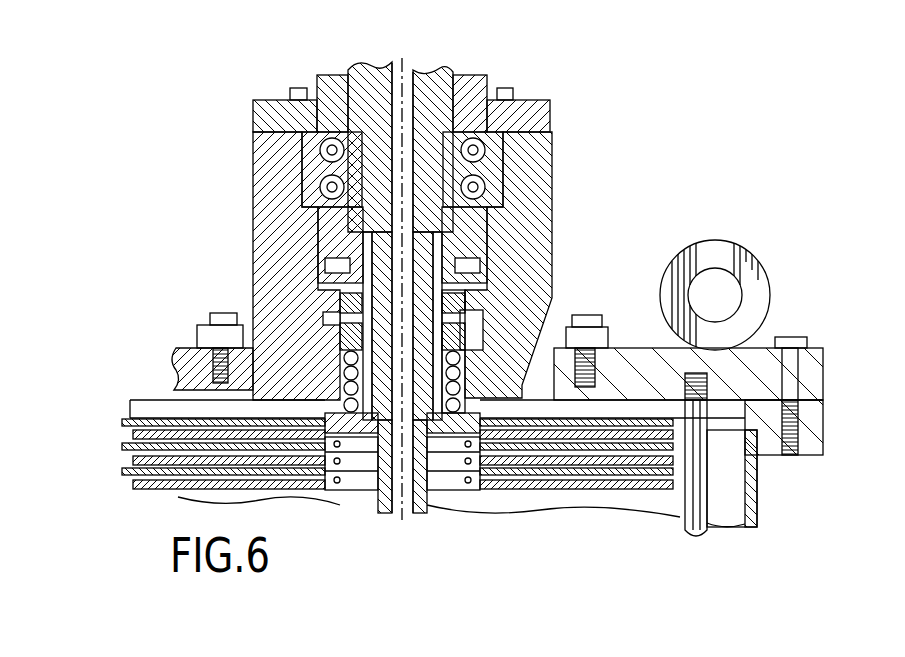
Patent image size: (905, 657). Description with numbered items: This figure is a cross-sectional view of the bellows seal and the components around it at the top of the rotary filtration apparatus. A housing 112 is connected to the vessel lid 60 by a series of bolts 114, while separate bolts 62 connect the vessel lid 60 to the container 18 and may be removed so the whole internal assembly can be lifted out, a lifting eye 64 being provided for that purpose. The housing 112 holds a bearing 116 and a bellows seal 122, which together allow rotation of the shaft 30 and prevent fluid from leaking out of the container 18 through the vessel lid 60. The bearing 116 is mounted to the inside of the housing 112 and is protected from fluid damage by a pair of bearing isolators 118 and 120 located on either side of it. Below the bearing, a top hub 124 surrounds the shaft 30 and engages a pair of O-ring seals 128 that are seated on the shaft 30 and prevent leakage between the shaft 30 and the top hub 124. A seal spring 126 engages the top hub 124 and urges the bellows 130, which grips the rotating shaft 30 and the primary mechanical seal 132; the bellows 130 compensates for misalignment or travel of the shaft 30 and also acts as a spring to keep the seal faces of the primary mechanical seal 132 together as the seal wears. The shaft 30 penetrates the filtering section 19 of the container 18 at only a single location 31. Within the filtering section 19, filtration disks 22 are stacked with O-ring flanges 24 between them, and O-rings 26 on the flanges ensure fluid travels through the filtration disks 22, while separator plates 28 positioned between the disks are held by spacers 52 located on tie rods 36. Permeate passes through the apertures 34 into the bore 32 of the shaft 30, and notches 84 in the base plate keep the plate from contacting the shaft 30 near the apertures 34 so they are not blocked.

The housing 112 is at (545, 150).
The bearing isolator 118 is at (323, 95).
The shaft 30 is at (433, 78).
The bore 32 is at (400, 65).
The apertures 34 is at (393, 500).
The bearing 116 is at (315, 155).
The bearing isolator 120 is at (345, 245).
The bellows seal 122 is at (332, 328).
The primary mechanical seal 132 is at (345, 300).
The bellows 130 is at (343, 343).
The O-ring seals 128 is at (360, 387).
The seal spring 126 is at (470, 372).
The bolts 114 is at (215, 315).
The vessel lid 60 is at (190, 350).
The single location 31 is at (330, 405).
The notches 84 is at (373, 487).
The O-ring flanges 24 is at (487, 463).
The O-rings 26 is at (467, 482).
The separator plates 28 is at (120, 447).
The filtration disks 22 is at (133, 459).
The filtering section 19 is at (652, 412).
The top hub 124 is at (462, 384).
The lifting eye 64 is at (723, 250).
The bolts 62 is at (790, 337).
The tie rods 36 is at (698, 520).
The container 18 is at (757, 500).
The spacers 52 is at (682, 492).